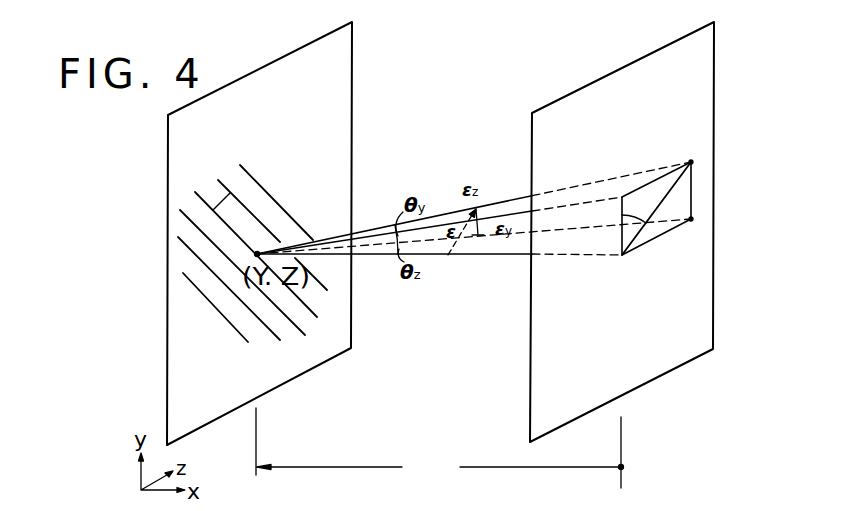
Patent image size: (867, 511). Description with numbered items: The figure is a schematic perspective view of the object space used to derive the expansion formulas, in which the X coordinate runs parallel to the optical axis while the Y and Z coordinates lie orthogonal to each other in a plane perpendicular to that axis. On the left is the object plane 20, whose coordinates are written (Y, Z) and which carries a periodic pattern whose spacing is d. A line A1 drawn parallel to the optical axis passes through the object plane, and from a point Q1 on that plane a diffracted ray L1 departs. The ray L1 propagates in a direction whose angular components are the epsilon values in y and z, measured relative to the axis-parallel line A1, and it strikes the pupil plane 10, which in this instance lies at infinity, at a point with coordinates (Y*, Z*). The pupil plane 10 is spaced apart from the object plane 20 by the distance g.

The object plane 20 is at (287, 233).
The pupil plane 10 is at (554, 108).
The ray L1 is at (373, 230).
The line parallel to the optical axis A1 is at (379, 257).
The point Q1 is at (261, 249).
The spacing of the periodic pattern d is at (252, 253).
The distance g is at (440, 453).